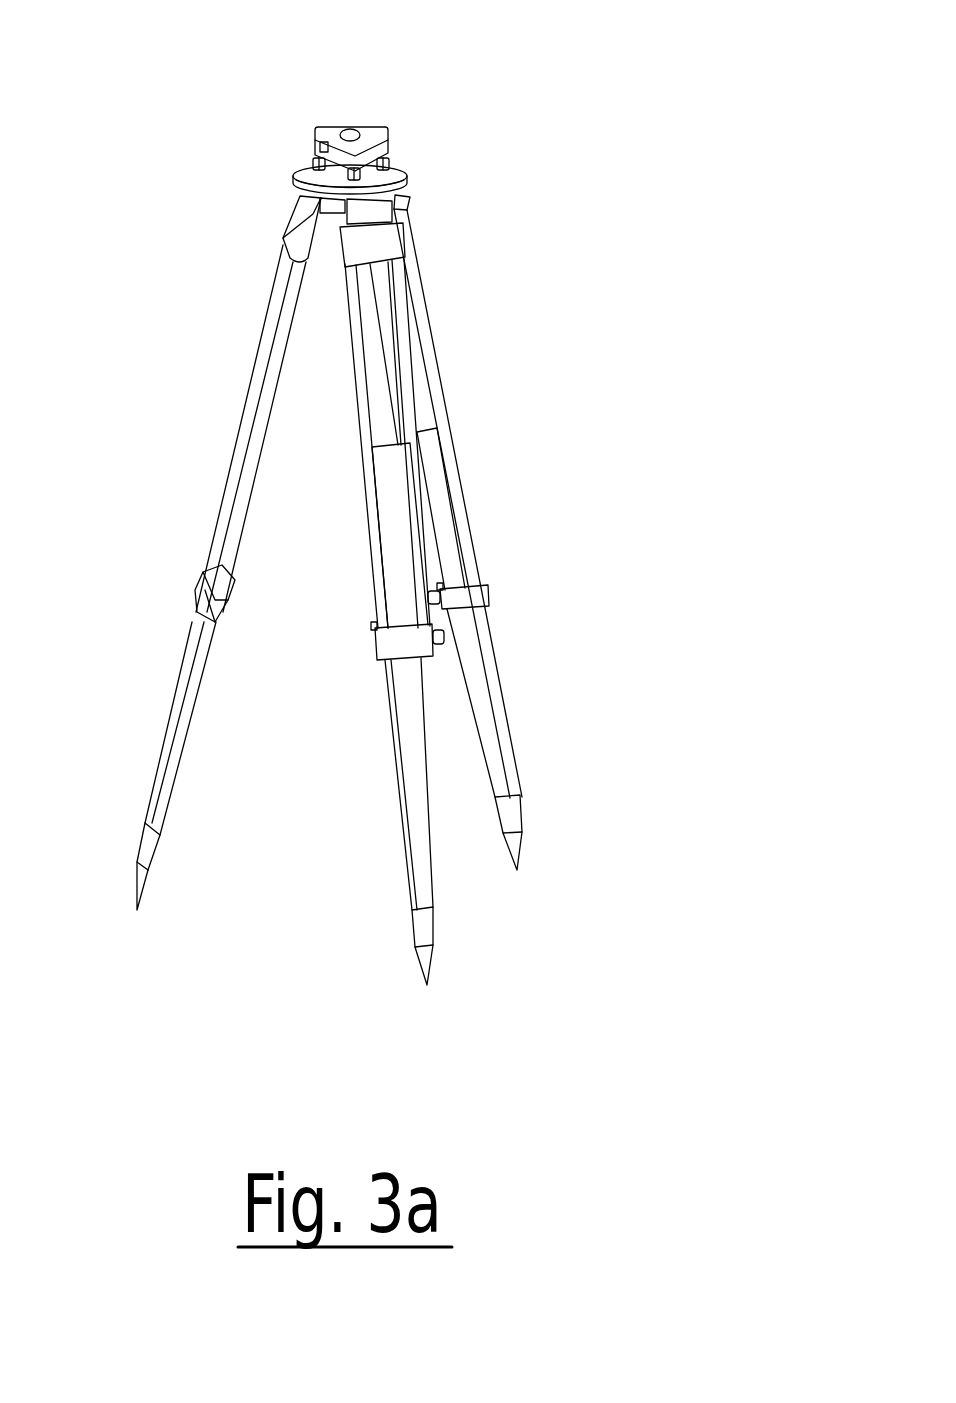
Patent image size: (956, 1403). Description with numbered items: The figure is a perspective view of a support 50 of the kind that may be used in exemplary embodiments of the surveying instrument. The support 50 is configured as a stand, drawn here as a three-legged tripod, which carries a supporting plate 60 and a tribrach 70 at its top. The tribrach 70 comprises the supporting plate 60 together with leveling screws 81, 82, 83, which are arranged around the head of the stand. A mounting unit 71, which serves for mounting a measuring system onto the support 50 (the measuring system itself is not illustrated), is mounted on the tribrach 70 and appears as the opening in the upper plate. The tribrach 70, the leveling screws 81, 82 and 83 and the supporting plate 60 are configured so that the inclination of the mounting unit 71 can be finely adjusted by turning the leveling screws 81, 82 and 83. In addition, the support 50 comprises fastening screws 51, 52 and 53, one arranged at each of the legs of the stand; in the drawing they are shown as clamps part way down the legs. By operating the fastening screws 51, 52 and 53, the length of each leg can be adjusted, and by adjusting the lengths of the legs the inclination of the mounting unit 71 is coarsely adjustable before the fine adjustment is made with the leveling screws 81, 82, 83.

The support 50 is at (675, 168).
The fastening screw 51 is at (200, 590).
The fastening screw 52 is at (447, 637).
The fastening screw 53 is at (443, 583).
The supporting plate 60 is at (403, 184).
The tribrach 70 is at (380, 128).
The mounting unit 71 is at (350, 127).
The leveling screw 81 is at (313, 163).
The leveling screw 82 is at (297, 176).
The leveling screw 83 is at (390, 160).